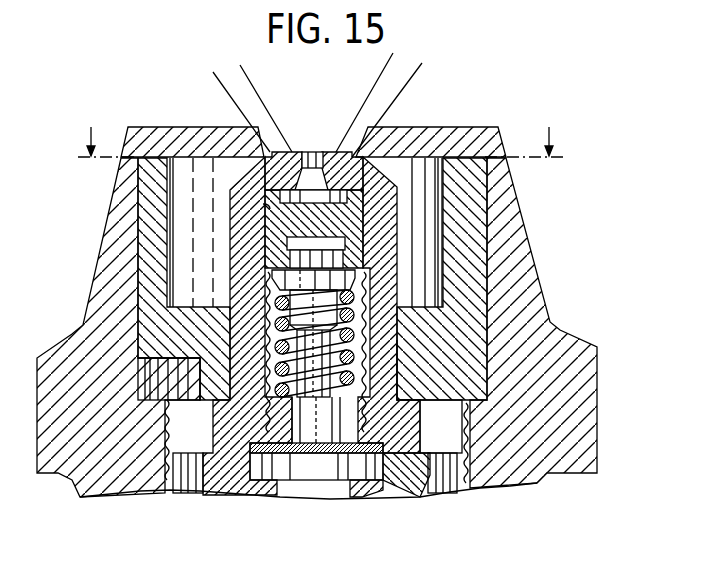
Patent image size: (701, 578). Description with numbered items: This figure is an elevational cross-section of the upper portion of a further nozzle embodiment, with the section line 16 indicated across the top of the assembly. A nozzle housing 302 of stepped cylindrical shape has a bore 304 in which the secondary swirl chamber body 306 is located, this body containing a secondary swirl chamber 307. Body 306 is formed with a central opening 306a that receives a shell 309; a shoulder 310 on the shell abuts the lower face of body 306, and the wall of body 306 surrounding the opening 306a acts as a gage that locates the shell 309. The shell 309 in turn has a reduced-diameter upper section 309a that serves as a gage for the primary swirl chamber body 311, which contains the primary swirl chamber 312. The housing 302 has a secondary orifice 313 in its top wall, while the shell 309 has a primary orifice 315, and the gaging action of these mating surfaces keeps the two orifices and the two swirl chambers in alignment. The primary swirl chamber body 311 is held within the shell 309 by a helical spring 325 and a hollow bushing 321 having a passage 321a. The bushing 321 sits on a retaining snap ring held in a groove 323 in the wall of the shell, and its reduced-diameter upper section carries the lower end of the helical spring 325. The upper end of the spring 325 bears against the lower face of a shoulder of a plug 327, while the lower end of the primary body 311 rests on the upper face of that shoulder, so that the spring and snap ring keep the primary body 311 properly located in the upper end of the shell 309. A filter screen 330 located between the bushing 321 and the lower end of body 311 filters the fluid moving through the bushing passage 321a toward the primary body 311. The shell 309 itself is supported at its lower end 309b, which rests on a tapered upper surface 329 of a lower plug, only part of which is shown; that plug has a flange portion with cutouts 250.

The section line 16- 16 is at (322, 127).
The cutouts 250 is at (203, 466).
The nozzle housing 302 is at (517, 245).
The bore 304 is at (492, 196).
The secondary swirl chamber body 306 is at (481, 306).
The central opening 306a is at (393, 361).
The swirl chamber 307 is at (217, 200).
The shell 309 is at (250, 185).
The reduced diameter upper section 309a is at (263, 207).
The lower end of the shell 309b is at (422, 495).
The shoulder 310 is at (419, 402).
The primary swirl chamber body 311 is at (363, 217).
The swirl chamber 312 is at (348, 158).
The secondary orifice 313 is at (276, 155).
The primary orifice 315 is at (303, 157).
The hollow bushing 321 is at (316, 462).
The passage 321a is at (282, 414).
The groove 323 is at (203, 469).
The helical spring 325 is at (268, 345).
The plug 327 is at (272, 277).
The tapered upper surface 329 is at (396, 482).
The filter screen 330 is at (366, 337).